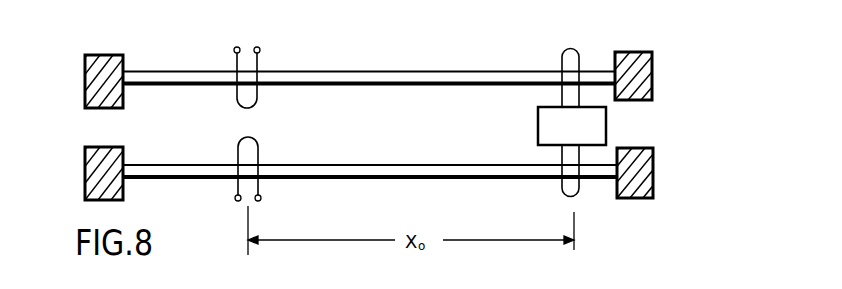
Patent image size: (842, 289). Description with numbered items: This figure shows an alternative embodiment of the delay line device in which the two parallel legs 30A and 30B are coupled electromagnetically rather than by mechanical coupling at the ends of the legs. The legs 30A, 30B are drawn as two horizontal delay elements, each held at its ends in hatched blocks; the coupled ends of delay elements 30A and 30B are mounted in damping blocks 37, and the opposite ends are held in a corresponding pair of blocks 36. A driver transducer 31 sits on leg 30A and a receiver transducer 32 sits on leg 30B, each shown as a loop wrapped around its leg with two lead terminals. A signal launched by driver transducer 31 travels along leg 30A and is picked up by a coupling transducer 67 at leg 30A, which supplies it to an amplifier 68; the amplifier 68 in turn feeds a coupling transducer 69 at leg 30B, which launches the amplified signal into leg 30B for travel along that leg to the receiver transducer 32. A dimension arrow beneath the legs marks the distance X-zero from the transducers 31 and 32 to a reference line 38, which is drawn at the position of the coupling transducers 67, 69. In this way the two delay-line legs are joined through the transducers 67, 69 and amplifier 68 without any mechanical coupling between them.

The parallel leg 30A is at (351, 71).
The parallel leg 30B is at (363, 163).
The driver transducer 31 is at (270, 60).
The receiver transducer 32 is at (268, 152).
The left anchor / damping blocks 36 is at (85, 110).
The damping blocks 37 is at (655, 102).
The reference line 38 is at (575, 232).
The coupling transducer 67 is at (558, 57).
The amplifier 68 is at (538, 125).
The coupling transducer 69 is at (575, 196).